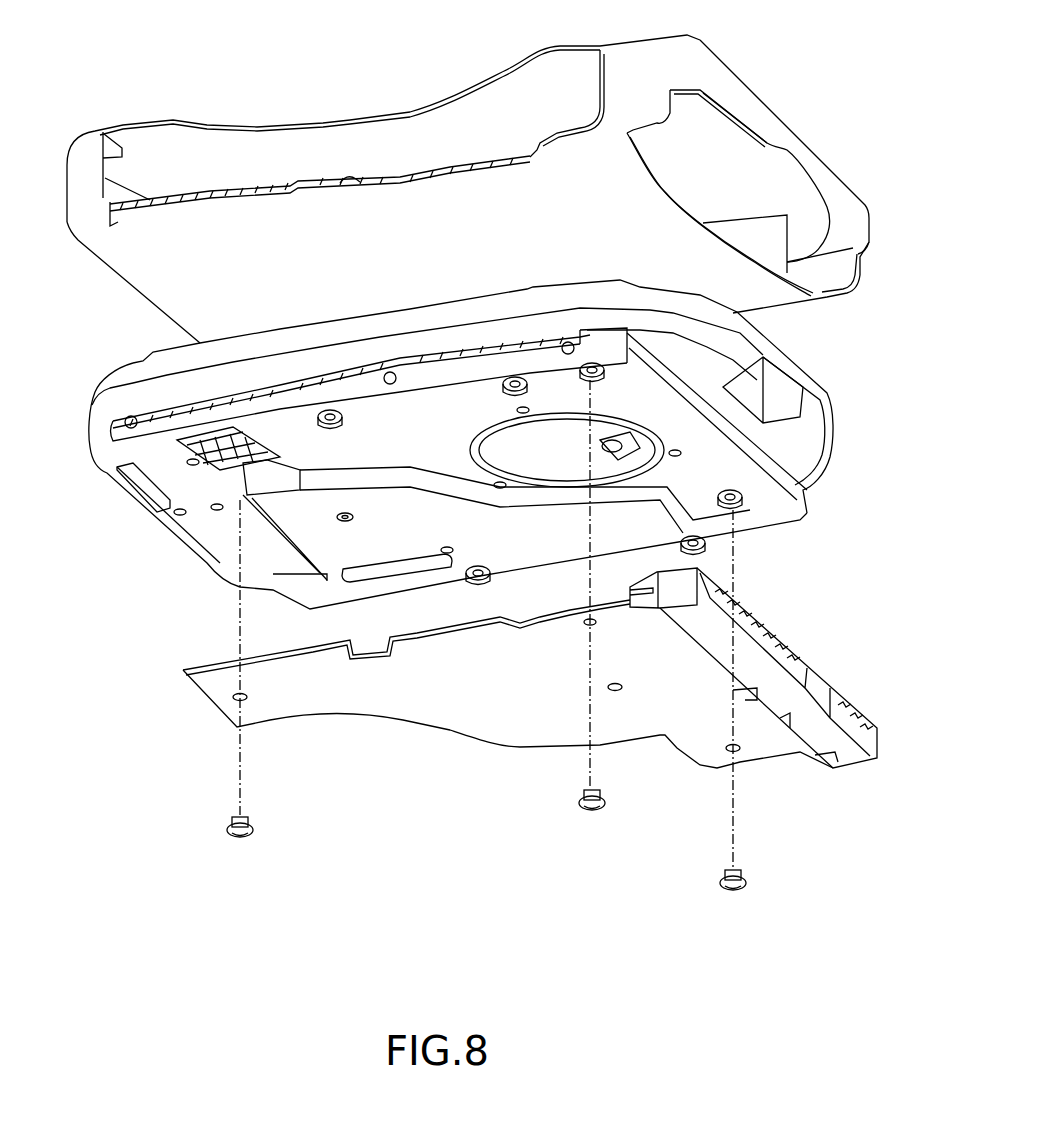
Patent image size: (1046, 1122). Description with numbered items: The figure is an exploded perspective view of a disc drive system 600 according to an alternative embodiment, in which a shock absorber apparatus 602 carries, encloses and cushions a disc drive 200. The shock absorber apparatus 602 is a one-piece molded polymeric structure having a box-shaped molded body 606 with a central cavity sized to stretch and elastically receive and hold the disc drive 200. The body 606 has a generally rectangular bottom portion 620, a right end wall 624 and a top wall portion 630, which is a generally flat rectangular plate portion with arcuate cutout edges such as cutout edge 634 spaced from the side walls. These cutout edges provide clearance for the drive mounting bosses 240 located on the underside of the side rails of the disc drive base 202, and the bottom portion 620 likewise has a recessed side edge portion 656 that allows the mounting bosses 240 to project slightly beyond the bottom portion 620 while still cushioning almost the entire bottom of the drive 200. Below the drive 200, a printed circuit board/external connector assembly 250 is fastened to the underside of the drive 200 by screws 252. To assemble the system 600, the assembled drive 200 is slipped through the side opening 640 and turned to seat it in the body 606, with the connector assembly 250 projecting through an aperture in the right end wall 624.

The disc drive system 600 is at (85, 938).
The shock absorber apparatus 602 is at (862, 170).
The molded body 606 is at (755, 77).
The bottom portion 620 is at (483, 240).
The right end wall 624 is at (777, 127).
The top wall portion 630 is at (218, 167).
The arcuate cutout edge 634 is at (331, 123).
The side opening 640 is at (424, 132).
The recessed side edge portion 656 is at (343, 190).
The disc drive 200 is at (836, 411).
The disc drive base 202 is at (797, 508).
The drive mounting boss 240 is at (500, 391).
The printed circuit board/external connector assembly 250 is at (797, 650).
The screw 252 is at (254, 831).